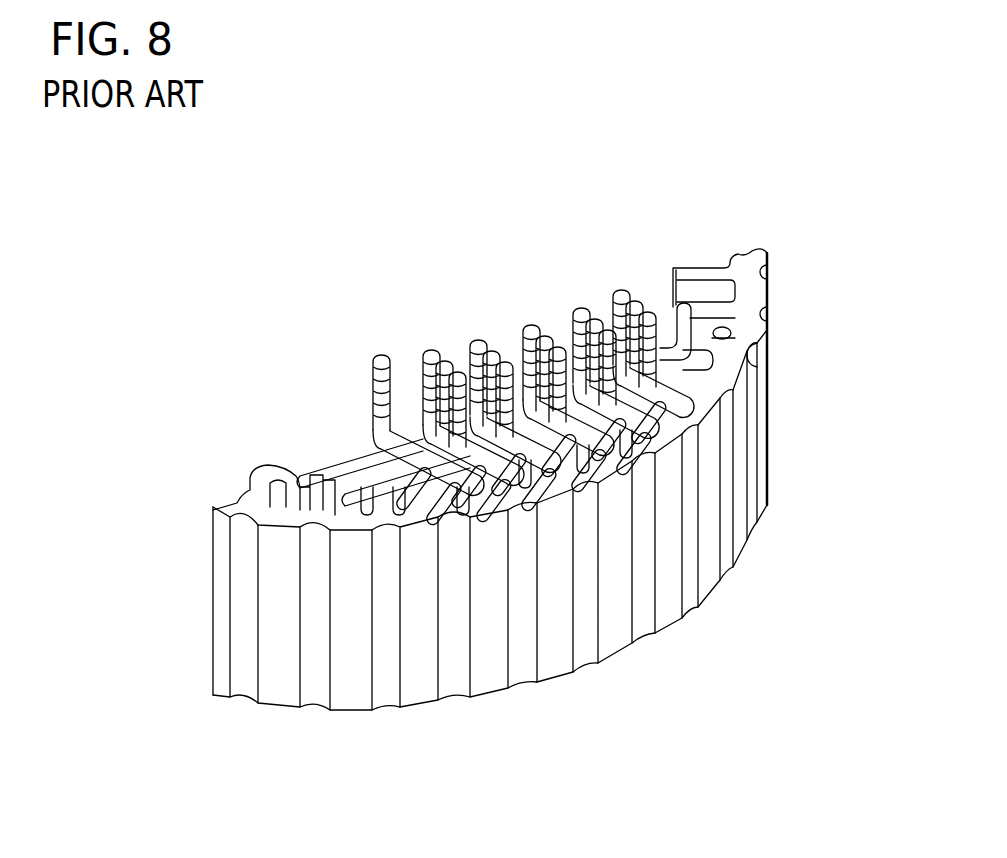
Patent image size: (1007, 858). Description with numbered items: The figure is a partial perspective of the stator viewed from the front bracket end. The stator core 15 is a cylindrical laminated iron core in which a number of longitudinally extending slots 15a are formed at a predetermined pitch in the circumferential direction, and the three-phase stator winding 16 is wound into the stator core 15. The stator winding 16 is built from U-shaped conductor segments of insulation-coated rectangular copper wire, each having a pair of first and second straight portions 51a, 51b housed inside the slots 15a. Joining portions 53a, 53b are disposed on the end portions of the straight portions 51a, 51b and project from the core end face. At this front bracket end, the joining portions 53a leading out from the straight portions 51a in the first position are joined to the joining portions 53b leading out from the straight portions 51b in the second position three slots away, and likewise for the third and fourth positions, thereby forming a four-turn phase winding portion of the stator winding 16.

The stator core 15 is at (483, 678).
The slots 15a is at (713, 331).
The stator winding 16 is at (458, 345).
The first straight portions 51a is at (683, 395).
The second straight portions 51b is at (525, 483).
The joining portions 53a is at (637, 287).
The joining portions 53b is at (594, 310).